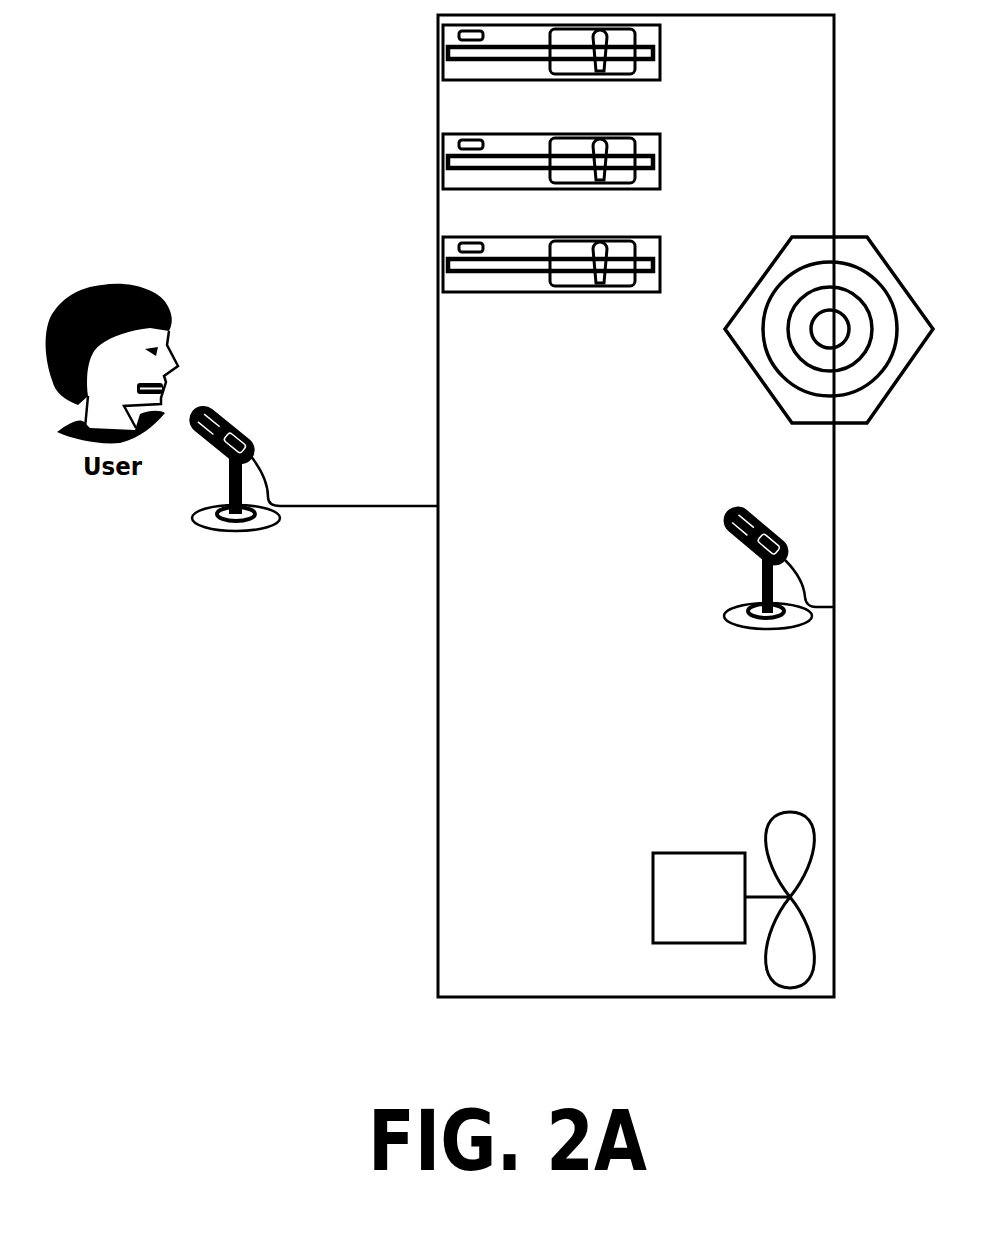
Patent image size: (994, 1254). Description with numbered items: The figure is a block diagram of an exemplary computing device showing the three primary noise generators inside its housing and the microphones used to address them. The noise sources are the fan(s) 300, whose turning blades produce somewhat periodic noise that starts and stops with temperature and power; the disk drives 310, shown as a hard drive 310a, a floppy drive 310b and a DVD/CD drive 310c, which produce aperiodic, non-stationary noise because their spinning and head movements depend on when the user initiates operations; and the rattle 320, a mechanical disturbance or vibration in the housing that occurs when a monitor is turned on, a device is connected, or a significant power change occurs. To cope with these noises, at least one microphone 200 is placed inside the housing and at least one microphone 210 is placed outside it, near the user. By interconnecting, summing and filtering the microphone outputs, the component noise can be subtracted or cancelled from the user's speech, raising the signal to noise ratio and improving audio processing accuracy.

The disk drives 310 is at (427, 175).
The hard drive 310a is at (551, 285).
The floppy drive 310b is at (561, 180).
The DVD/CD drive 310c is at (570, 74).
The rattle 320 is at (785, 331).
The microphone 200 is at (692, 565).
The microphone 210 is at (275, 514).
The fan(s) 300 is at (732, 885).